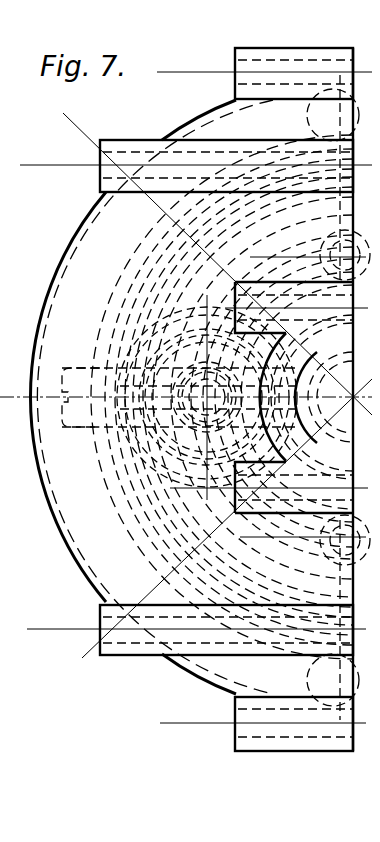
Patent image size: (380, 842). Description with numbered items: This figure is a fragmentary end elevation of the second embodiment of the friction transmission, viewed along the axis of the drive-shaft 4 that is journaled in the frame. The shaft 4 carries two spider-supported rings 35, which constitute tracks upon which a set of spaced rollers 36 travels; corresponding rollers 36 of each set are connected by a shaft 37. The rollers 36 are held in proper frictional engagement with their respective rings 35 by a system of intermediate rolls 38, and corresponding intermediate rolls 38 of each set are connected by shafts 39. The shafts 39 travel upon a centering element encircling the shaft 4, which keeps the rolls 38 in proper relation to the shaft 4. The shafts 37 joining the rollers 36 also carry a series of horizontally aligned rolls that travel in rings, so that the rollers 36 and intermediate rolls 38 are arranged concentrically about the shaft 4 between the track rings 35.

The drive-shaft 4 is at (299, 397).
The spider-supported ring 35 is at (140, 530).
The roller 36 is at (258, 415).
The shaft 37 is at (207, 397).
The intermediate roll 38 is at (130, 268).
The shaft 39 is at (225, 308).